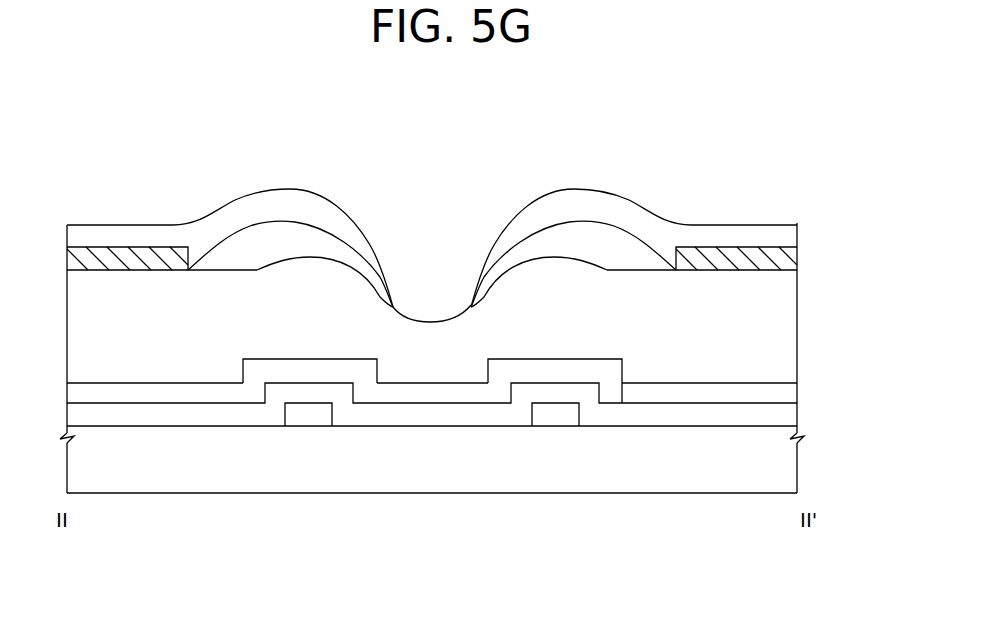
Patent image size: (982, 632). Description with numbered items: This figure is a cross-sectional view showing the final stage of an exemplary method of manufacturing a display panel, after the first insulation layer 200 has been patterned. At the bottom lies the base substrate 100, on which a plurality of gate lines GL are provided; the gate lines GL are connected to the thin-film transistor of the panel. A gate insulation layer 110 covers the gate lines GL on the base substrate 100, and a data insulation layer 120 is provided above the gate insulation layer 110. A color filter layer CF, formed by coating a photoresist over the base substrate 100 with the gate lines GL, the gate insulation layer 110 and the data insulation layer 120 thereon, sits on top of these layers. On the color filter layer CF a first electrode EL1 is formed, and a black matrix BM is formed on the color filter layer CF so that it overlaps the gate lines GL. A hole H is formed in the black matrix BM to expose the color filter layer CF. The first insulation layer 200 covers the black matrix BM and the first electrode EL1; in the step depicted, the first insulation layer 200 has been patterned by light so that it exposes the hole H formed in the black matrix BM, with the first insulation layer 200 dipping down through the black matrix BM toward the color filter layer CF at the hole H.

The base substrate 100 is at (789, 468).
The gate insulation layer 110 is at (789, 416).
The data insulation layer 120 is at (789, 393).
The first insulation layer 200 is at (789, 233).
The color filter layer CF is at (789, 352).
The black matrix BM is at (249, 253).
The gate line GL is at (311, 417).
The hole H is at (425, 300).
The first electrode EL1 is at (789, 258).